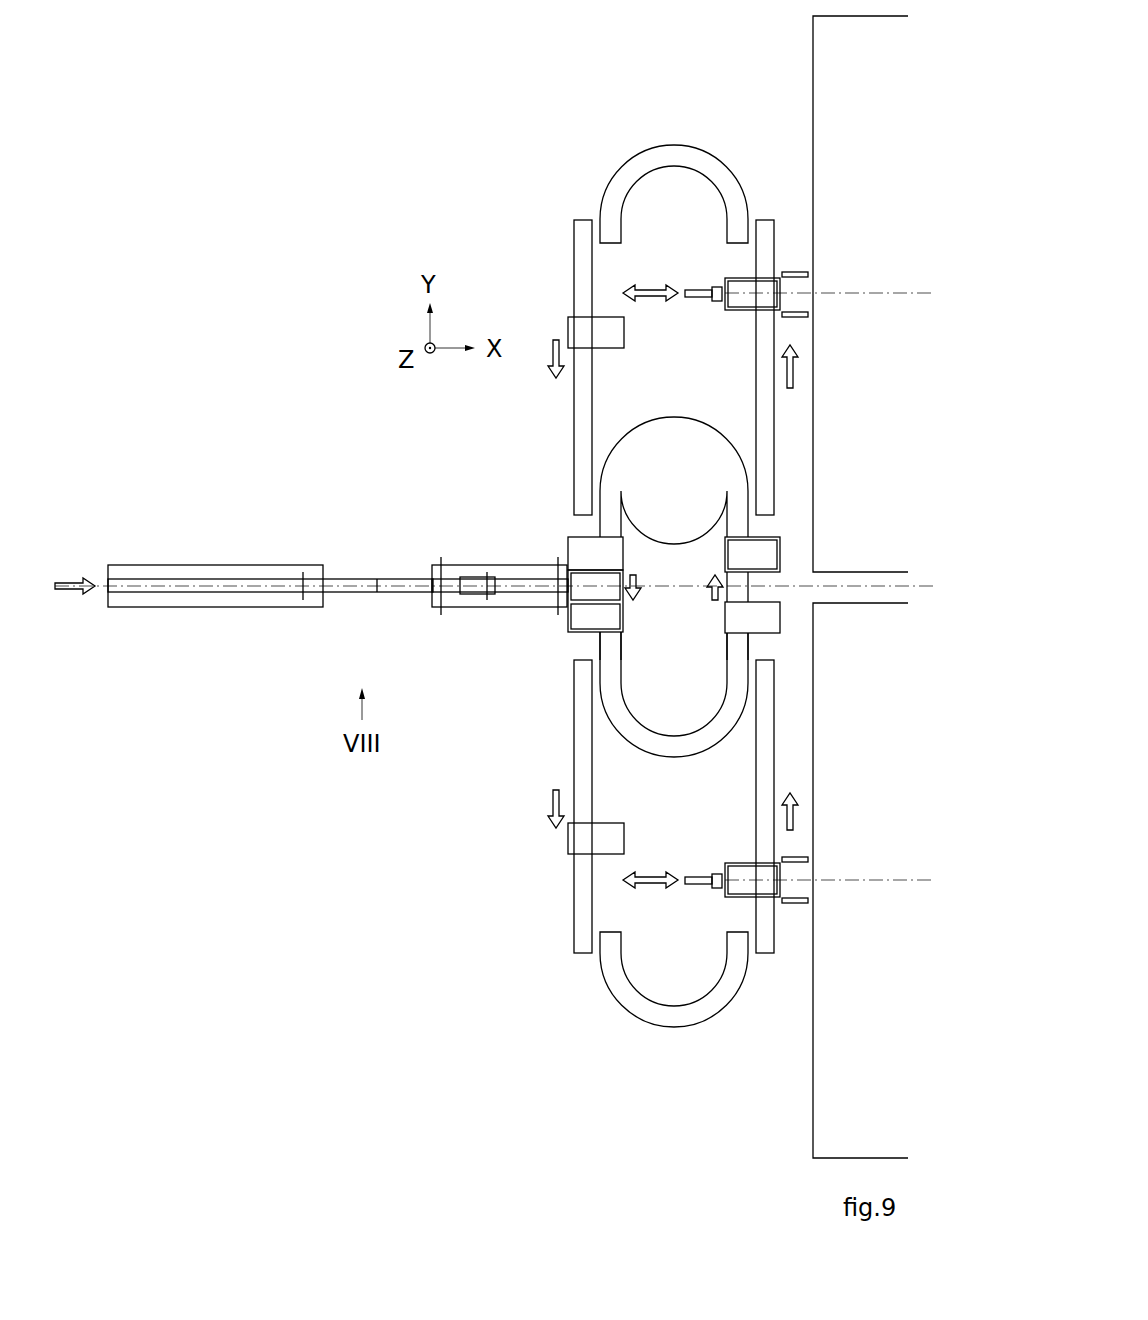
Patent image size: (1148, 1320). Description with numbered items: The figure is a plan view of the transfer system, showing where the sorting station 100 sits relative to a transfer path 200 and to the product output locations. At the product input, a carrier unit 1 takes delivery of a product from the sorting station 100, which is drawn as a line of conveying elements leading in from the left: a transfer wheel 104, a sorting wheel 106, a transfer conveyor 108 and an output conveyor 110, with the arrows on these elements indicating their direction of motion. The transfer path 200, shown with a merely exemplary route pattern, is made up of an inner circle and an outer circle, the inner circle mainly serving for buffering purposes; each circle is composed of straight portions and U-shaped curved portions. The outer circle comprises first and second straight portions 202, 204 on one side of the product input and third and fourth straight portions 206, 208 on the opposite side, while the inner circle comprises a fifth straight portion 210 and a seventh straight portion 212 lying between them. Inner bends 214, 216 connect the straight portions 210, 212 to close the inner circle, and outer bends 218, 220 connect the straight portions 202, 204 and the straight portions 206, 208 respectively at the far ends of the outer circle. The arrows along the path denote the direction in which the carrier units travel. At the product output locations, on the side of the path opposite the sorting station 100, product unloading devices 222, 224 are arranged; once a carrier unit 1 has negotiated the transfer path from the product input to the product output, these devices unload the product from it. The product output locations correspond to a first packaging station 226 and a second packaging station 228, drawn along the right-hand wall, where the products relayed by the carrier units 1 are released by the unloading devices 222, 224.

The carrier unit 1 is at (788, 537).
The sorting station 100 is at (330, 507).
The transfer wheel 104 is at (168, 593).
The sorting wheel 106 is at (165, 565).
The transfer conveyor 108 is at (408, 577).
The output conveyor 110 is at (480, 562).
The transfer path 200 is at (668, 120).
The first straight portion 202 is at (574, 463).
The second straight portion 204 is at (775, 490).
The third straight portion 206 is at (574, 737).
The fourth straight portion 208 is at (775, 733).
The fifth straight portion 210 is at (602, 642).
The seventh straight portion 212 is at (748, 646).
The inner bend 214 is at (674, 417).
The inner bend 216 is at (674, 757).
The outer bend 218 is at (624, 167).
The outer bend 220 is at (695, 1023).
The product unloading device 222 is at (705, 292).
The product unloading device 224 is at (703, 880).
The first packaging station 226 is at (898, 243).
The second packaging station 228 is at (898, 830).